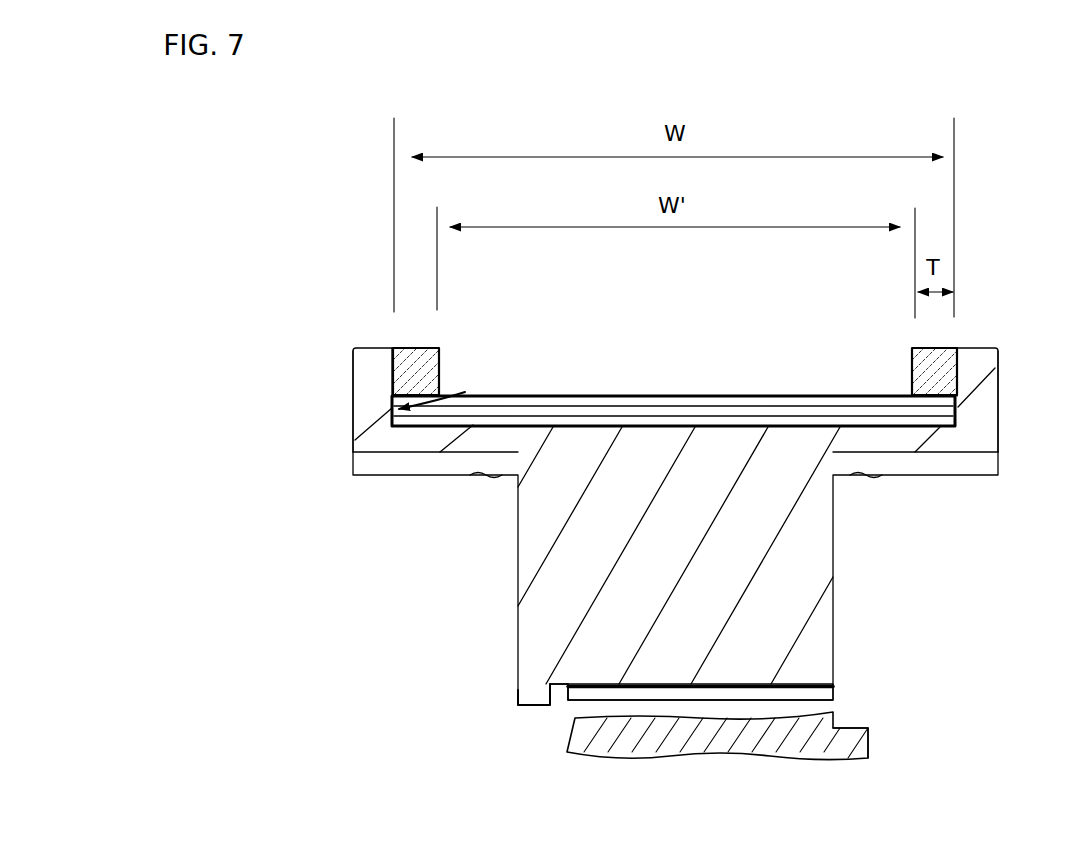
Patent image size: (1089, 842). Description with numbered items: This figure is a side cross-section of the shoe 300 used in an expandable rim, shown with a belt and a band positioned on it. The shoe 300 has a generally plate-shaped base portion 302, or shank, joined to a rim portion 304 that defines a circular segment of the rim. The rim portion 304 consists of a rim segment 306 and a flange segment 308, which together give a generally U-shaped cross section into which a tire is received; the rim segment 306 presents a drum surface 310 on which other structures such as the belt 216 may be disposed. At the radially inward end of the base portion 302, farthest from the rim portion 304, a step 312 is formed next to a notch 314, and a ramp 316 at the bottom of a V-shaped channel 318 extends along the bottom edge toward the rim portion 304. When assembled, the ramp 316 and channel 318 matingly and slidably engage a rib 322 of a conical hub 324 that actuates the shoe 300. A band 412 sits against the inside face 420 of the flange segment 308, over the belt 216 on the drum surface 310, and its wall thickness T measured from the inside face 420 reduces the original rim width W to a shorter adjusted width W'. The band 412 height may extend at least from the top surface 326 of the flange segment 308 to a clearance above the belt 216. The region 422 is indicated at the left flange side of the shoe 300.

The belt 216 is at (683, 405).
The shoe 300 is at (1030, 350).
The base portion 302 is at (853, 573).
The rim portion 304 is at (1007, 432).
The rim segment 306 is at (453, 437).
The flange segment 308 is at (373, 378).
The drum surface 310 is at (725, 420).
The step 312 is at (532, 678).
The notch 314 is at (560, 700).
The ramp 316 is at (762, 678).
The V-shaped channel 318 is at (850, 686).
The rib 322 is at (850, 725).
The conical hub 324 is at (887, 750).
The top surface of the flange segment 326 is at (983, 340).
The band 412 is at (420, 378).
The inside face 420 is at (447, 387).
The left flange portion 422 is at (347, 387).